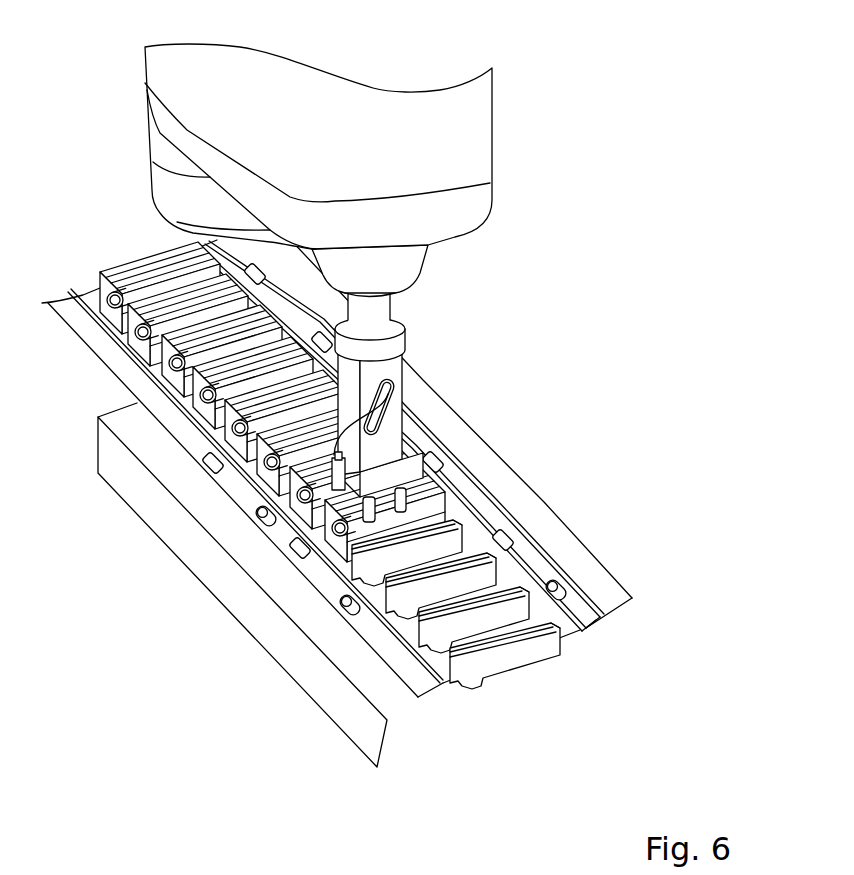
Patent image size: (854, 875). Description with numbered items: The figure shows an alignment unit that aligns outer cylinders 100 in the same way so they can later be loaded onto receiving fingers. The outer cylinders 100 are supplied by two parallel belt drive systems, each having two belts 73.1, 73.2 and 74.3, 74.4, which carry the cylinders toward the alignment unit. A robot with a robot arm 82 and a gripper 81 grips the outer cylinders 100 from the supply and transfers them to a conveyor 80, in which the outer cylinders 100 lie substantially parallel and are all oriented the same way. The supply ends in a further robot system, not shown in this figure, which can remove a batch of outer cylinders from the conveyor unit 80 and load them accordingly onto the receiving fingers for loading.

The belt 73.1 is at (417, 697).
The belt 73.2 is at (443, 683).
The belt 74.3 is at (592, 624).
The belt 74.4 is at (592, 604).
The conveyor 80 is at (512, 653).
The gripper 81 is at (440, 478).
The robot arm 82 is at (355, 442).
The outer cylinder 100 is at (527, 563).